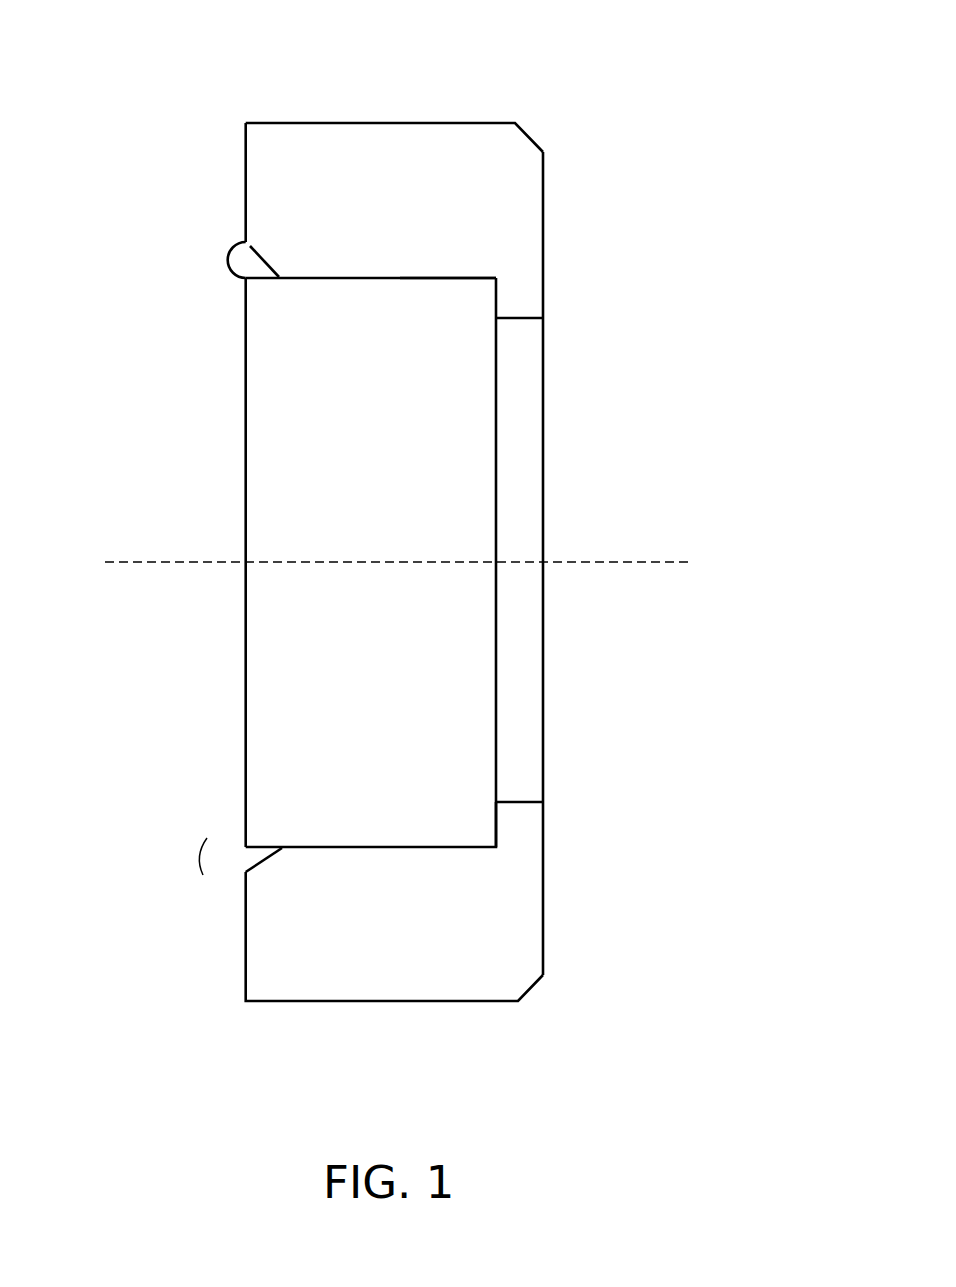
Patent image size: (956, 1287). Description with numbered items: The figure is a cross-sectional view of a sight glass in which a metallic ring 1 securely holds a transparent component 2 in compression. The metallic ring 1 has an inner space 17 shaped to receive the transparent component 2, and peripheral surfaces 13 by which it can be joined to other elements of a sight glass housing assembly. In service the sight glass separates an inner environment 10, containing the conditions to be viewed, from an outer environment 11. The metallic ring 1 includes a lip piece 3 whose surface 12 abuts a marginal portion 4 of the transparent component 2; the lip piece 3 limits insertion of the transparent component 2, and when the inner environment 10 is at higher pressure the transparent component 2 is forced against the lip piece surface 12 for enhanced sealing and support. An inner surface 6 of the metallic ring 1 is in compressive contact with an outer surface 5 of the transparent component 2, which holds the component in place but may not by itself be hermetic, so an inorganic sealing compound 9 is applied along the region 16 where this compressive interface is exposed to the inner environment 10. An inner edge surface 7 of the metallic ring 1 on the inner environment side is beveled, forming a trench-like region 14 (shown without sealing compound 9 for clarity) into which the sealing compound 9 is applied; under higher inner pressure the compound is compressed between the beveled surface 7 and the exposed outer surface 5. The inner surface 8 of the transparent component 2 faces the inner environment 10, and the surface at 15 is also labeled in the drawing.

The metallic ring 1 is at (455, 163).
The transparent component 2 is at (305, 462).
The lip piece 3 is at (527, 830).
The marginal portion 4 is at (497, 828).
The outer surface 5 is at (347, 278).
The inner surface 6 is at (317, 275).
The inner edge surface 7 is at (262, 868).
The inner surface 8 is at (243, 693).
The sealing compound 9 is at (227, 270).
The inner environment 10 is at (147, 493).
The outer environment 11 is at (639, 493).
The lip piece surface 12 is at (502, 295).
The peripheral surfaces 13 is at (243, 970).
The trench-like region 14 is at (227, 865).
The upper side wall 15 is at (245, 153).
The region 16 is at (207, 875).
The inner space 17 is at (440, 302).